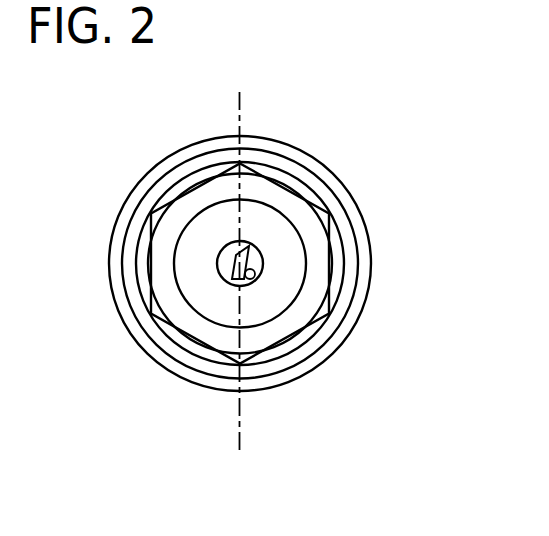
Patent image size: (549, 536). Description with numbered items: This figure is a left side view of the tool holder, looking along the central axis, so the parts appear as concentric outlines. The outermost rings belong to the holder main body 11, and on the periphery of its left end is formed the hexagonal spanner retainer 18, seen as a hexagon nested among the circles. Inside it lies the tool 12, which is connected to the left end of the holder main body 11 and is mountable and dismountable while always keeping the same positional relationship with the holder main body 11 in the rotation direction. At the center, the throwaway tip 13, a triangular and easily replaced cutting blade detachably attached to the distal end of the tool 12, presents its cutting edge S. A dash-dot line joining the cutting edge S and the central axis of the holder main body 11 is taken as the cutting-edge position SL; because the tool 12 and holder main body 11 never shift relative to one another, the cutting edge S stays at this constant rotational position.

The holder main body 11 is at (318, 167).
The hexagonal spanner retainer 18 is at (260, 167).
The tool 12 is at (216, 222).
The throwaway tip 13 is at (233, 277).
The cutting edge S is at (243, 284).
The cutting-edge position SL is at (242, 290).